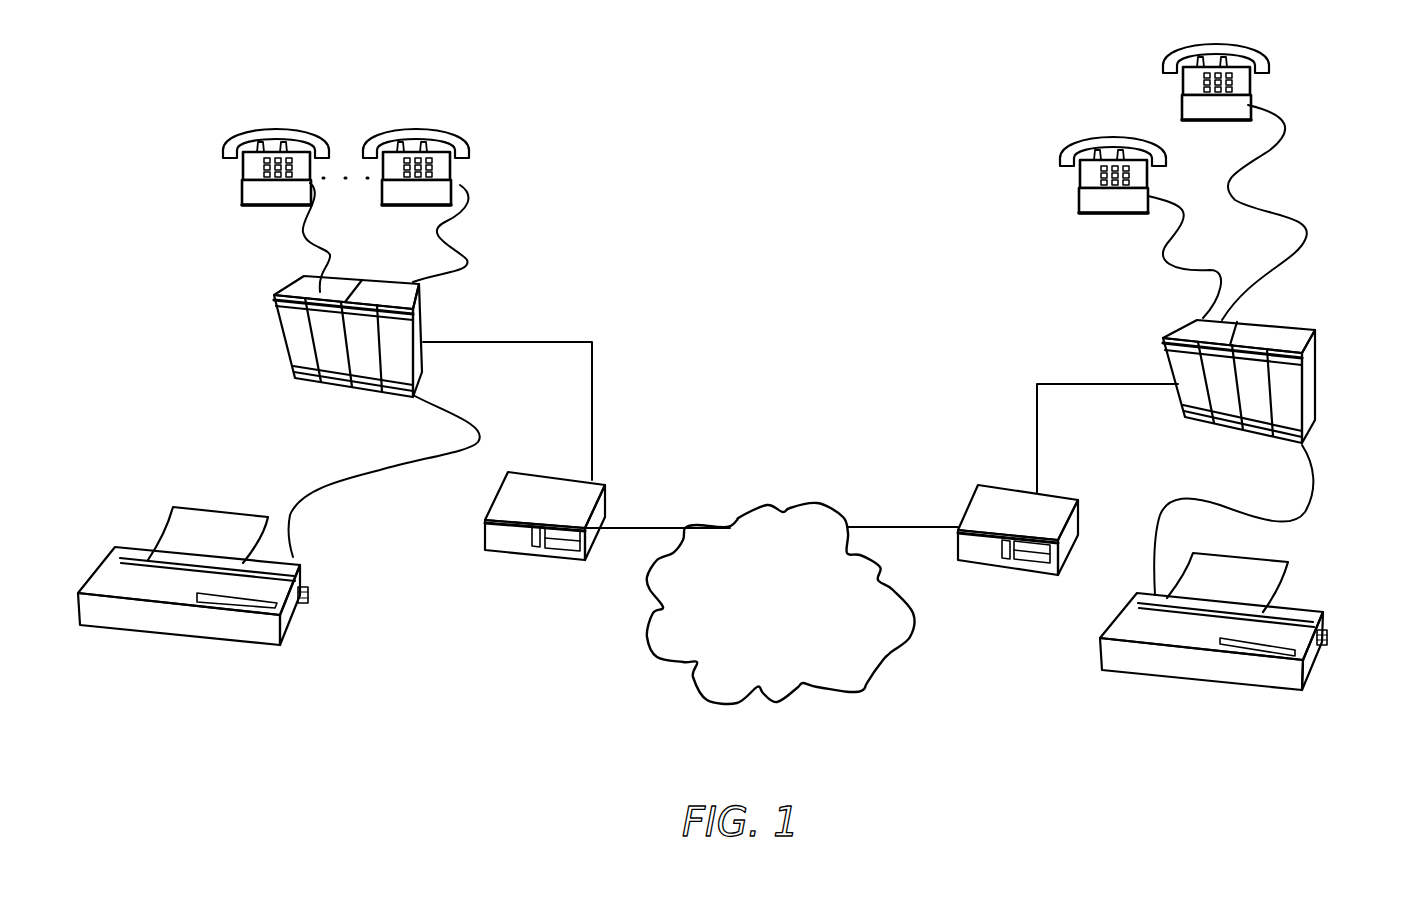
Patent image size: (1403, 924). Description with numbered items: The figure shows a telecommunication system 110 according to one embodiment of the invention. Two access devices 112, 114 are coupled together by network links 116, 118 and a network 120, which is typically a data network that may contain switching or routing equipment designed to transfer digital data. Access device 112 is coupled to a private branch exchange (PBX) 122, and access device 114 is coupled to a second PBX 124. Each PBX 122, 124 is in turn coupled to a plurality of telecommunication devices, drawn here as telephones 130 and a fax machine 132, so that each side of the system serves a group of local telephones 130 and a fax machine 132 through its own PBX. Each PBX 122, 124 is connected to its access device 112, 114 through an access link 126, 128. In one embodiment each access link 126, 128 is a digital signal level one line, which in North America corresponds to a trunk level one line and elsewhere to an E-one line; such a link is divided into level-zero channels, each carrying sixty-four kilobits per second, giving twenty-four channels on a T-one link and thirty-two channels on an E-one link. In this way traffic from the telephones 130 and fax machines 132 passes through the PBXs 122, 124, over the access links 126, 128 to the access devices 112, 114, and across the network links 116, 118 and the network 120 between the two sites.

The telecommunication system 110 is at (620, 719).
The access device 112 is at (597, 540).
The access device 114 is at (1043, 573).
The network link 116 is at (663, 528).
The network link 118 is at (871, 527).
The network 120 is at (865, 690).
The private branch exchange (PBX) 122 is at (310, 382).
The private branch exchange (PBX) 124 is at (1175, 330).
The access link 126 is at (595, 403).
The access link 128 is at (1037, 461).
The telephones 130 is at (243, 187).
The fax machine 132 is at (303, 577).